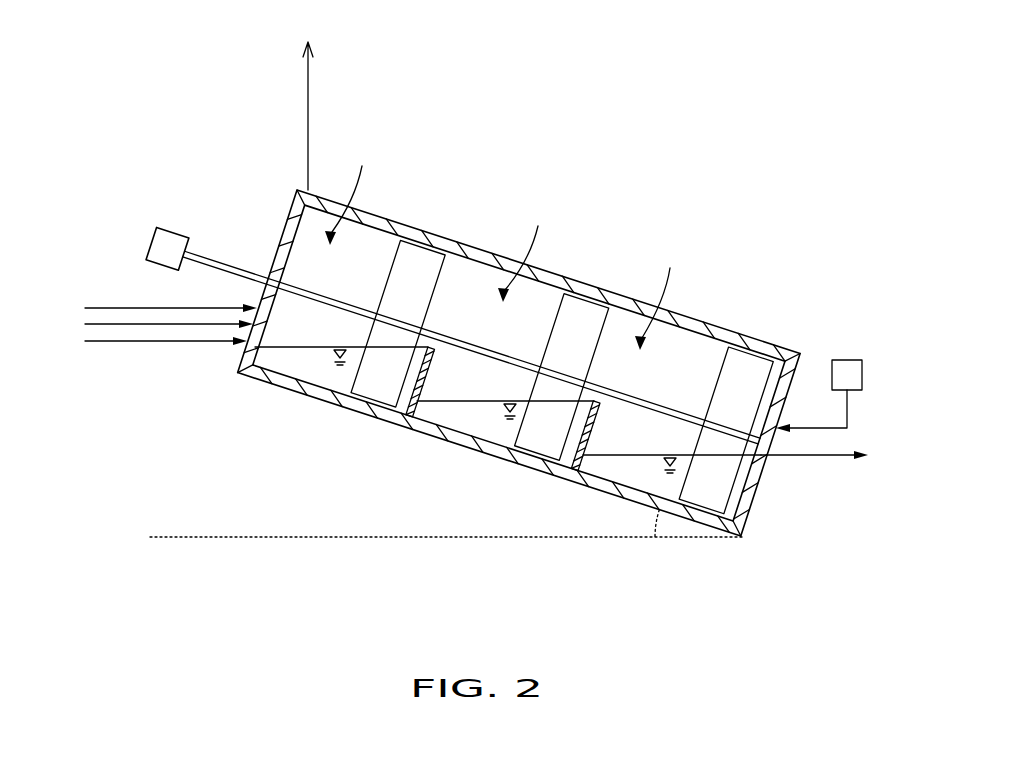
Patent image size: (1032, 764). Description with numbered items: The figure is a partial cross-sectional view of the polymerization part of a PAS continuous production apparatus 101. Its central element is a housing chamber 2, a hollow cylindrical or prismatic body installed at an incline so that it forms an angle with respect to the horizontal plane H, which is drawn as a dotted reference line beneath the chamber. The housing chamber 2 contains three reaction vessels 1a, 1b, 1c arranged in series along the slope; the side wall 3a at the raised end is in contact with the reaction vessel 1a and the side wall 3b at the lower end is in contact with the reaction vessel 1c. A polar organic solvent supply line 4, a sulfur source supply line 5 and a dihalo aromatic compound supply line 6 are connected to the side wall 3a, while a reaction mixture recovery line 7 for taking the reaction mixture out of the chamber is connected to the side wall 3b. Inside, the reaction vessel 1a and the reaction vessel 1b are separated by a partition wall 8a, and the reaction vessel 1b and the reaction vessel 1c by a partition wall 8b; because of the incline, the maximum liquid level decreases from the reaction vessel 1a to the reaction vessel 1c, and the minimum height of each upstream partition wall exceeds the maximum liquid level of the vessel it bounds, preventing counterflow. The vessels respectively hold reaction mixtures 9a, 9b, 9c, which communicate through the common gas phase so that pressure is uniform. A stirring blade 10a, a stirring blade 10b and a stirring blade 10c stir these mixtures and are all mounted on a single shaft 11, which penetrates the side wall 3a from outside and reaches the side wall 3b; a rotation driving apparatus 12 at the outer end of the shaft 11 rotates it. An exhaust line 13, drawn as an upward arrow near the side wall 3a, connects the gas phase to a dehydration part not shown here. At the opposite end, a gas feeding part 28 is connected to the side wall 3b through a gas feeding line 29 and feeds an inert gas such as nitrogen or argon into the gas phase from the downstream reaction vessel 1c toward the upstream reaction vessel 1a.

The PAS continuous production apparatus 101 is at (628, 80).
The housing chamber 2 is at (777, 330).
The side wall 3a is at (284, 230).
The side wall 3b is at (752, 502).
The reaction vessel 1a is at (355, 193).
The reaction vessel 1b is at (528, 252).
The reaction vessel 1c is at (663, 297).
The stirring blade 10a is at (418, 262).
The stirring blade 10b is at (575, 318).
The stirring blade 10c is at (738, 365).
The partition wall 8a is at (412, 410).
The partition wall 8b is at (572, 458).
The reaction mixture 9a is at (313, 372).
The reaction mixture 9b is at (478, 424).
The reaction mixture 9c is at (607, 470).
The shaft 11 is at (215, 260).
The rotation driving apparatus 12 is at (176, 228).
The exhaust line 13 is at (311, 88).
The polar organic solvent supply line 4 is at (88, 306).
The sulfur source supply line 5 is at (88, 323).
The dihalo aromatic compound supply line 6 is at (88, 340).
The reaction mixture recovery line 7 is at (826, 458).
The gas feeding part 28 is at (847, 358).
The gas feeding line 29 is at (849, 412).
The horizontal plane H is at (420, 537).